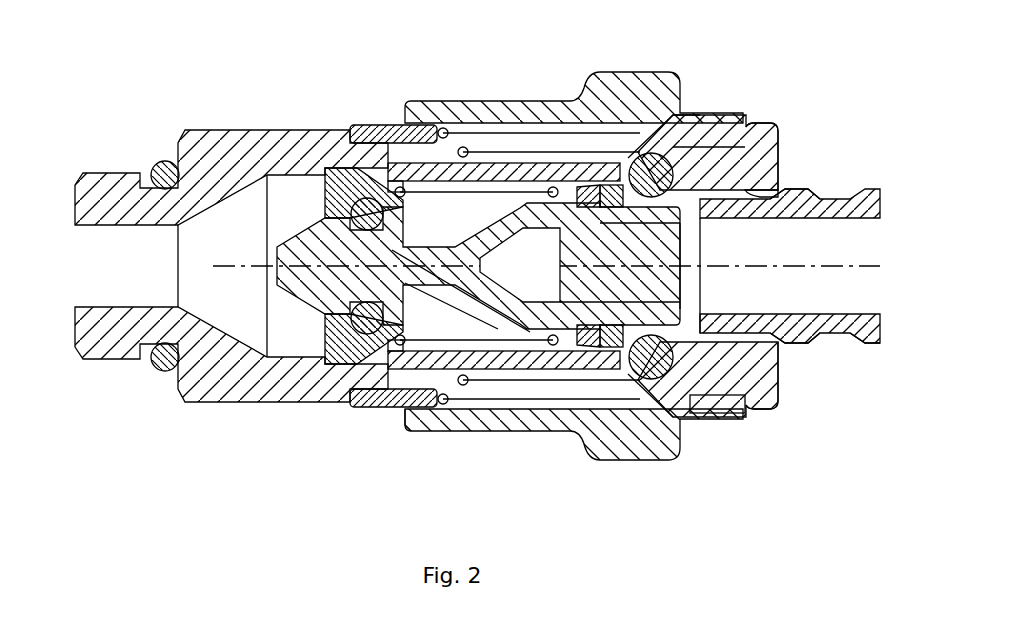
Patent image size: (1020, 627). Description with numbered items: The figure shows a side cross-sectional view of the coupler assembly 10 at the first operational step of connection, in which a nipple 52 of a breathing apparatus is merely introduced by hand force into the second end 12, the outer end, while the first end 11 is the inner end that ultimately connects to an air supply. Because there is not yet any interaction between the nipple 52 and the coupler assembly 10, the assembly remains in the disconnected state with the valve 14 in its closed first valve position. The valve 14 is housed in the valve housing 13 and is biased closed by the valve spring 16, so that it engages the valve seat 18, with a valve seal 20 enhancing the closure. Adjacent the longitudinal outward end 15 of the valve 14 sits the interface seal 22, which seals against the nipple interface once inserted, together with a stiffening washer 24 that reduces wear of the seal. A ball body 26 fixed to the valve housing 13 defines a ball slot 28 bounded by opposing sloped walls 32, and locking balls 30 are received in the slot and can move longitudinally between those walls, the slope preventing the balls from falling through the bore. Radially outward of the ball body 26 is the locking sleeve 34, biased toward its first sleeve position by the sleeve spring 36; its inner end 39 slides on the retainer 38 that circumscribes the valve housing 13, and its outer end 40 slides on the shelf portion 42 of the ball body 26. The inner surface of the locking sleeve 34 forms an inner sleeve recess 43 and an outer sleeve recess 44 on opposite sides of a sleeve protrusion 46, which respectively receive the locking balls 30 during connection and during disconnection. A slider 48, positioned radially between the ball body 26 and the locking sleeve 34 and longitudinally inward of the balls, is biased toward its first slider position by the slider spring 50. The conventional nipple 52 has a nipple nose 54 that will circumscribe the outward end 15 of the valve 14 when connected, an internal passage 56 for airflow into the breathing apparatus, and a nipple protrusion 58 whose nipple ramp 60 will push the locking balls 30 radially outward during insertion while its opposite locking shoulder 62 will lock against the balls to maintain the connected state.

The coupler assembly 10 is at (154, 96).
The first end 11 is at (77, 233).
The second end 12 is at (778, 138).
The valve housing 13 is at (80, 320).
The valve 14 is at (300, 297).
The longitudinal outward end 15 is at (679, 253).
The valve spring 16 is at (420, 193).
The valve seat 18 is at (363, 183).
The valve seal 20 is at (350, 330).
The interface seal 22 is at (585, 183).
The stiffening washer 24 is at (608, 183).
The ball body 26 is at (757, 135).
The ball slot 28 is at (618, 350).
The locking ball 30 is at (655, 380).
The sloped walls 32 is at (598, 358).
The locking sleeve 34 is at (642, 415).
The sleeve spring 36 is at (458, 402).
The retainer 38 is at (358, 408).
The inner end 39 is at (404, 412).
The outer end 40 is at (708, 419).
The shelf portion 42 is at (723, 397).
The inner sleeve recess 43 is at (633, 150).
The outer sleeve recess 44 is at (683, 145).
The sleeve protrusion 46 is at (662, 152).
The slider 48 is at (556, 345).
The slider spring 50 is at (495, 385).
The nipple 52 is at (860, 336).
The nipple nose 54 is at (702, 318).
The internal passage 56 is at (794, 256).
The nipple protrusion 58 is at (795, 340).
The nipple ramp 60 is at (757, 178).
The locking shoulder 62 is at (795, 192).